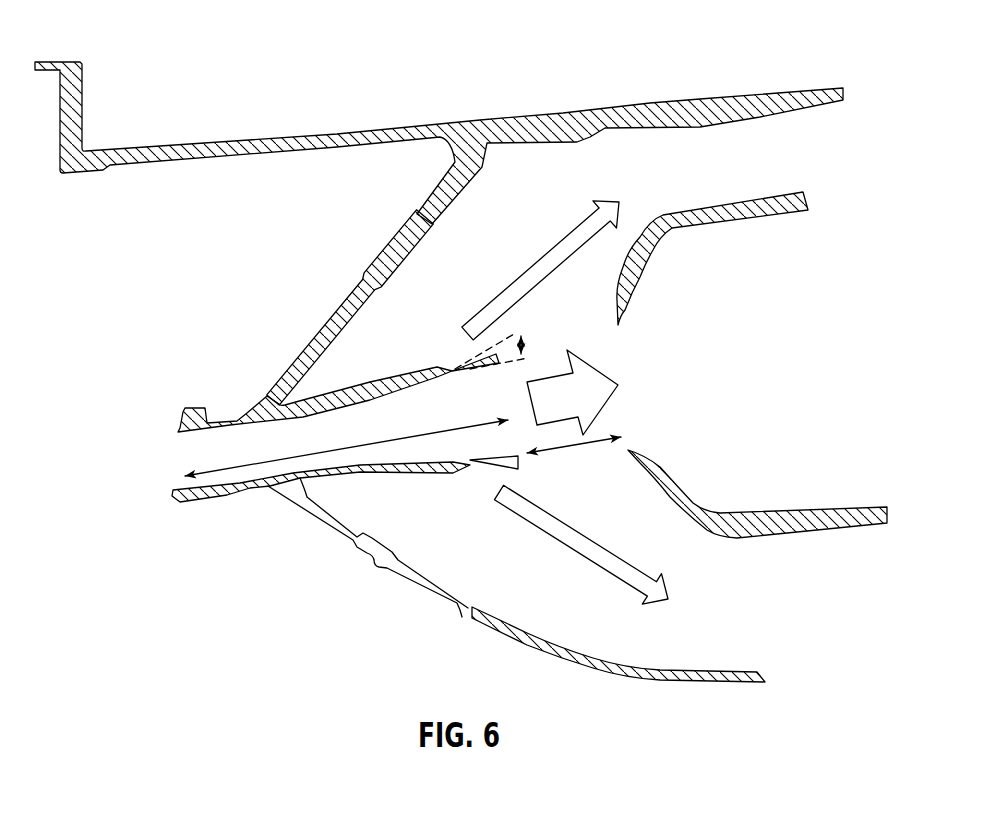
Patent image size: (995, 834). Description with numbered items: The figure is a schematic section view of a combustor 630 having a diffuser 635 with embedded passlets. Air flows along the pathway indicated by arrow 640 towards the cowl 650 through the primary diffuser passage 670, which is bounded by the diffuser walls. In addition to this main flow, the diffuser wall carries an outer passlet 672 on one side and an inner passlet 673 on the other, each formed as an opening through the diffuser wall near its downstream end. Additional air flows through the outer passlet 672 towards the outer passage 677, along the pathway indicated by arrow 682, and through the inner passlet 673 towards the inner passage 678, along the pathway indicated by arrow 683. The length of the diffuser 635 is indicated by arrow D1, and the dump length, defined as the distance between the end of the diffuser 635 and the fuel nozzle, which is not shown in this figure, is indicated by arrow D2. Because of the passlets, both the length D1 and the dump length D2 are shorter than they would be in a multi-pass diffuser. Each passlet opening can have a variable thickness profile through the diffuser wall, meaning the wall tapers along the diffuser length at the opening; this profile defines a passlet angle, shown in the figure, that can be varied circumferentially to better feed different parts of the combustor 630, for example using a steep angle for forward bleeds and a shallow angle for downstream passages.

The combustor 630 is at (763, 45).
The diffuser 635 is at (160, 414).
The arrow 640 is at (597, 371).
The cowl 650 is at (637, 280).
The primary diffuser passage 670 is at (452, 424).
The outer passlet 672 is at (463, 354).
The inner passlet 673 is at (481, 478).
The outer passage 677 is at (792, 162).
The inner passage 678 is at (753, 608).
The arrow 682 is at (528, 263).
The arrow 683 is at (577, 552).
The arrow D1 is at (260, 462).
The arrow D2 is at (548, 453).